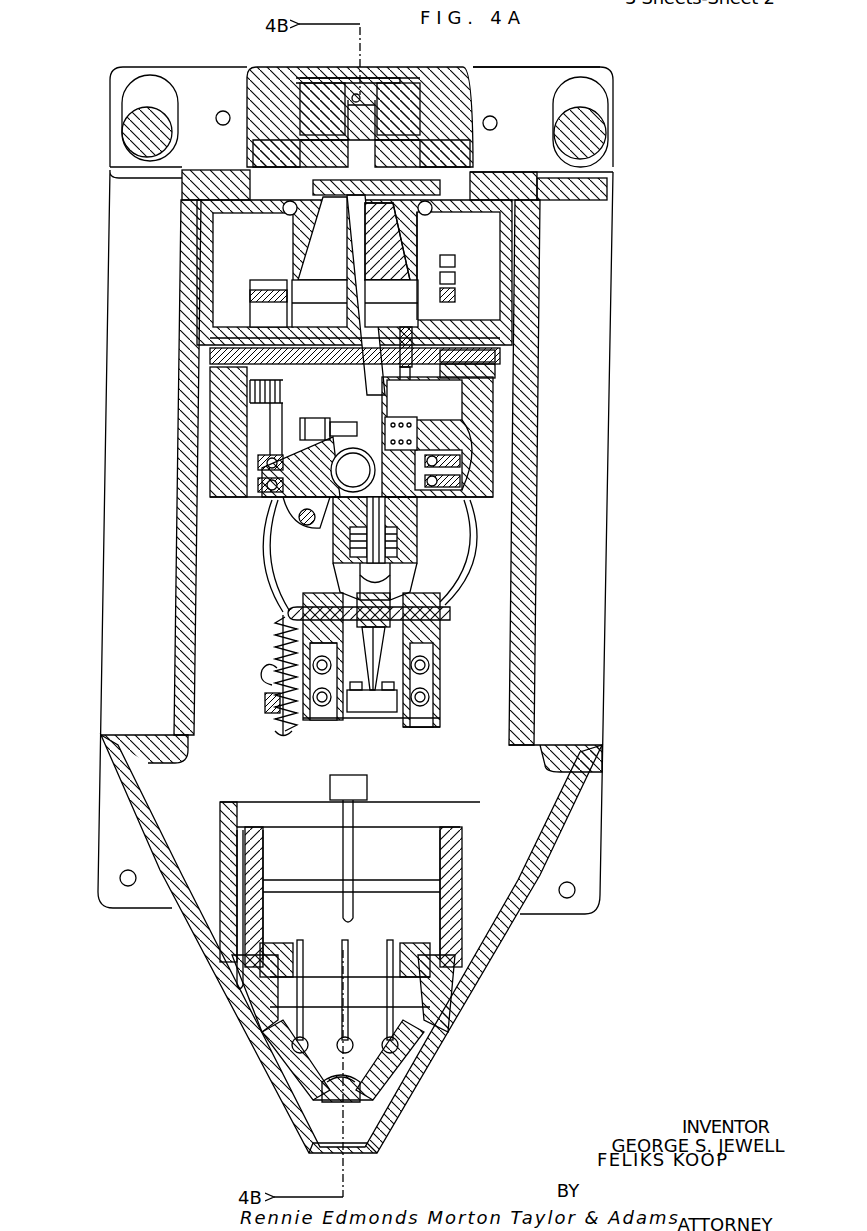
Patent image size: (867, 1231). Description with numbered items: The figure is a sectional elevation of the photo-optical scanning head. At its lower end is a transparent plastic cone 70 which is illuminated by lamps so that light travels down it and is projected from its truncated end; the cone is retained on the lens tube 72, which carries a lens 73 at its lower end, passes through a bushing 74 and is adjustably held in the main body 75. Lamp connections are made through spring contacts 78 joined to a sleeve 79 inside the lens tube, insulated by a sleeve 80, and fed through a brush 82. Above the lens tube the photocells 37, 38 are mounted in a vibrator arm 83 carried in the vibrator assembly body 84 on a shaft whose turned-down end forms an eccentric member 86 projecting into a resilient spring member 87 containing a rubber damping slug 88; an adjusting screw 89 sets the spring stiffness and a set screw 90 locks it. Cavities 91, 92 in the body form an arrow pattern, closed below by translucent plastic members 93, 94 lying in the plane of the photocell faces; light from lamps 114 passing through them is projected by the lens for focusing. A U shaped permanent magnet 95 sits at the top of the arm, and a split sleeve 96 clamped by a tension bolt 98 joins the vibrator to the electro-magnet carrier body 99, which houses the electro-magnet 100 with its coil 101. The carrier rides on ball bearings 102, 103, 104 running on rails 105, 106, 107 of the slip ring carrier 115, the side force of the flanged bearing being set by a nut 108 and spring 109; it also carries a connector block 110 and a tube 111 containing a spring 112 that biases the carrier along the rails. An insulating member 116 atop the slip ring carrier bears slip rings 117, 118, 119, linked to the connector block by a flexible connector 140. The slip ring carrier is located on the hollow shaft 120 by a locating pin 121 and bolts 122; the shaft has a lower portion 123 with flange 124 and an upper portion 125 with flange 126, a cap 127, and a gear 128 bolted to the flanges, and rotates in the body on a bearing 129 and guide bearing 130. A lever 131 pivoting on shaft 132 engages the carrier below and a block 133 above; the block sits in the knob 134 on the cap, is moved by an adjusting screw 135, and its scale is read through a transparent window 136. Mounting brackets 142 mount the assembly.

The photocell 37 is at (357, 714).
The photocell 38 is at (390, 714).
The transparent plastic cone 70 is at (410, 1072).
The lens tube 72 is at (440, 1005).
The lens 73 is at (357, 1098).
The bushing 74 is at (240, 950).
The main body 75 is at (602, 282).
The spring contacts 78 is at (347, 942).
The sleeve 79 is at (385, 895).
The insulating sleeve 80 is at (240, 975).
The brush 82 is at (345, 870).
The vibrator arm 83 is at (390, 627).
The vibrator assembly body 84 is at (440, 650).
The eccentric member 86 is at (285, 612).
The resilient spring member 87 is at (278, 660).
The rubber damping slug 88 is at (278, 645).
The adjusting screw 89 is at (275, 728).
The set screw 90 is at (265, 700).
The cavity 91 is at (322, 713).
The cavity 92 is at (420, 655).
The translucent plastic member 93 is at (330, 720).
The translucent plastic member 94 is at (425, 727).
The U shaped permanent magnet 95 is at (410, 585).
The split sleeve 96 is at (333, 570).
The tension bolt 98 is at (300, 520).
The electro-magnet carrier body 99 is at (455, 445).
The electro-magnet 100 is at (420, 556).
The coil 101 is at (418, 540).
The ball bearing 102 is at (465, 460).
The ball bearing 103 is at (283, 445).
The ball bearing 104 is at (263, 442).
The rail 105 is at (455, 505).
The rail 106 is at (250, 410).
The rail 107 is at (262, 497).
The nut 108 is at (300, 427).
The spring 109 is at (330, 440).
The connector block 110 is at (415, 420).
The tube 111 is at (375, 470).
The spring 112 is at (336, 470).
The lamps 114 is at (426, 700).
The slip ring carrier 115 is at (222, 395).
The insulating member 116 is at (212, 357).
The slip ring 117 is at (492, 358).
The slip ring 118 is at (495, 380).
The slip ring 119 is at (495, 395).
The hollow shaft 120 is at (293, 298).
The locating pin 121 is at (345, 322).
The bolt 122 is at (412, 340).
The lower portion of hollow shaft 123 is at (412, 290).
The flange 124 is at (455, 280).
The upper portion of hollow shaft 125 is at (420, 240).
The flange 126 is at (455, 262).
The cap 127 is at (458, 150).
The gear 128 is at (455, 296).
The bearing 129 is at (278, 240).
The guide bearing 130 is at (278, 310).
The lever 131 is at (362, 272).
The shaft 132 is at (345, 205).
The block 133 is at (397, 95).
The knob 134 is at (470, 105).
The adjusting screw 135 is at (352, 93).
The transparent window 136 is at (382, 77).
The flexible connector 140 is at (270, 548).
The mounting bracket 142 is at (522, 80).